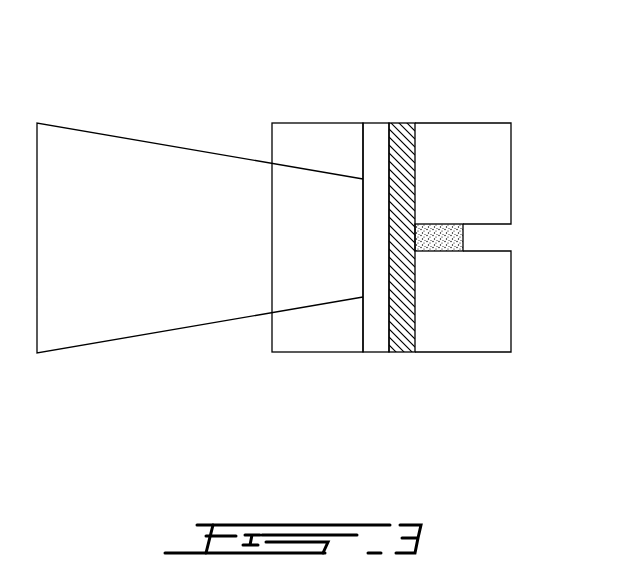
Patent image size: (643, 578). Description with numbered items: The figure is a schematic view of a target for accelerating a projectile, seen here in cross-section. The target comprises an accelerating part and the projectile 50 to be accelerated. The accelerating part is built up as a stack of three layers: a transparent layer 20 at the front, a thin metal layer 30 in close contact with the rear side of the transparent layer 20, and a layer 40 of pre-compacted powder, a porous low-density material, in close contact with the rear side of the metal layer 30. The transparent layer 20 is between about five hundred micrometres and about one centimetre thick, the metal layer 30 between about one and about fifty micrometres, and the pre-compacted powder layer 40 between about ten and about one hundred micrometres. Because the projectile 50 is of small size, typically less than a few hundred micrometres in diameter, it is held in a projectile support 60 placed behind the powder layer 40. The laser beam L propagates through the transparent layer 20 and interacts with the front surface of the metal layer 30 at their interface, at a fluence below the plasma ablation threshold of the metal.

The laser beam L is at (153, 155).
The transparent layer 20 is at (322, 122).
The metal layer 30 is at (379, 122).
The layer of pre-compacted powder 40 is at (402, 353).
The projectile 50 is at (460, 243).
The projectile support 60 is at (467, 138).